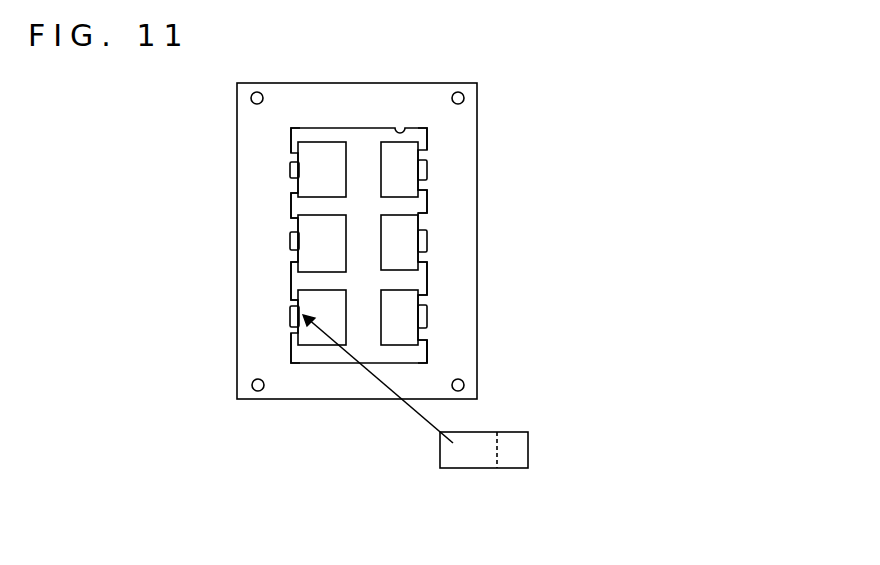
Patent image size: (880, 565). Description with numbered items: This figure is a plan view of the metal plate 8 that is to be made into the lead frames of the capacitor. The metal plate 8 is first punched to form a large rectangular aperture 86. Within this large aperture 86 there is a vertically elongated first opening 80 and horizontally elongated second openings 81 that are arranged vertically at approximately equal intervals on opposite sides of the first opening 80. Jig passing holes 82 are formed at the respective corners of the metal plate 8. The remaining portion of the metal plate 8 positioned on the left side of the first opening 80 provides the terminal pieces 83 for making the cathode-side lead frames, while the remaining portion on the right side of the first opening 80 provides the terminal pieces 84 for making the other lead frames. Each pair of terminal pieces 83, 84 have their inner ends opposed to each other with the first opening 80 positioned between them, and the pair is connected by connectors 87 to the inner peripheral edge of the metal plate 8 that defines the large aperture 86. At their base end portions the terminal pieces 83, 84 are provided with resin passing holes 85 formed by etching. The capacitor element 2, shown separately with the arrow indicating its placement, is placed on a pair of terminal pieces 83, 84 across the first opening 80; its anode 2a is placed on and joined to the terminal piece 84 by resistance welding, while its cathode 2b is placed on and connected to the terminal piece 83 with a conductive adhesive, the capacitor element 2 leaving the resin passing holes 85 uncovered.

The capacitor element 2 is at (431, 438).
The anode 2a is at (522, 475).
The cathode 2b is at (465, 460).
The metal plate 8 is at (475, 128).
The first opening 80 is at (350, 160).
The second openings 81 is at (293, 202).
The jig passing holes 82 is at (256, 92).
The terminal piece 83 is at (325, 152).
The terminal piece 84 is at (397, 190).
The resin passing holes 85 is at (290, 170).
The large rectangular aperture 86 is at (412, 128).
The corner connection 87 is at (290, 152).